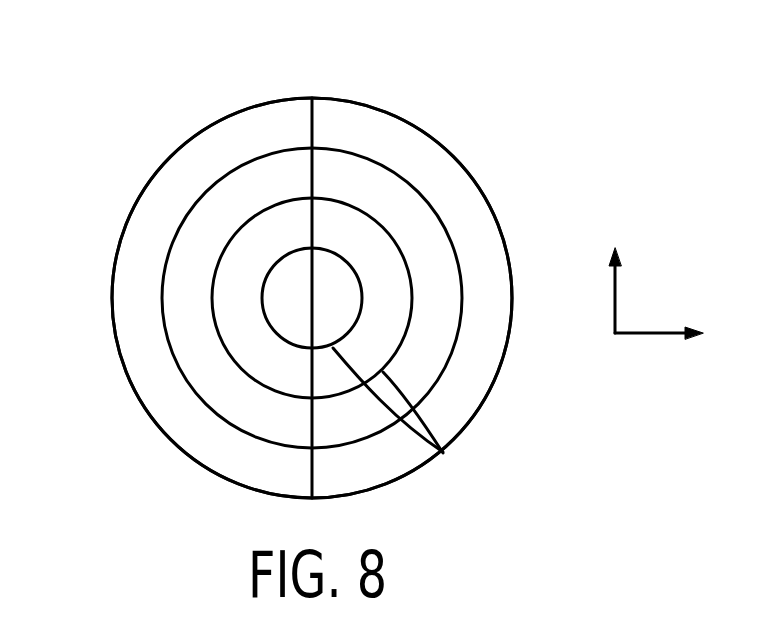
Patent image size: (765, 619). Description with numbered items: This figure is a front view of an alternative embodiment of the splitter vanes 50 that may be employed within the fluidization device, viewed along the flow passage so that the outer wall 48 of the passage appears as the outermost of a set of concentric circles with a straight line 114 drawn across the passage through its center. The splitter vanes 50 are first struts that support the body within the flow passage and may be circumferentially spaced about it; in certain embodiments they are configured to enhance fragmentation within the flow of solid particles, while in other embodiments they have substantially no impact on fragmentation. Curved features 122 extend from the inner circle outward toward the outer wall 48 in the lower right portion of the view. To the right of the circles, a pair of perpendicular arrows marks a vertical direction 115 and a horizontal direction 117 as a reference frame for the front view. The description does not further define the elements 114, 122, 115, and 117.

The splitter vanes 50 is at (100, 236).
The outer wall 48 is at (487, 197).
The axis line 114 is at (313, 122).
The curved path 122 is at (418, 405).
The y-axis 115 is at (615, 297).
The x-axis 117 is at (651, 334).